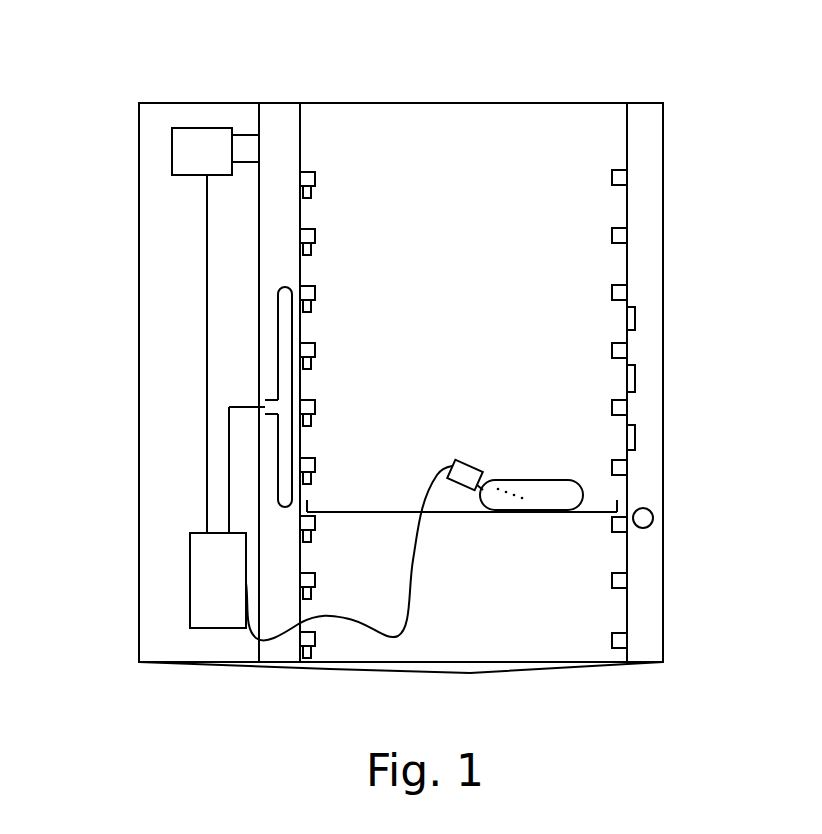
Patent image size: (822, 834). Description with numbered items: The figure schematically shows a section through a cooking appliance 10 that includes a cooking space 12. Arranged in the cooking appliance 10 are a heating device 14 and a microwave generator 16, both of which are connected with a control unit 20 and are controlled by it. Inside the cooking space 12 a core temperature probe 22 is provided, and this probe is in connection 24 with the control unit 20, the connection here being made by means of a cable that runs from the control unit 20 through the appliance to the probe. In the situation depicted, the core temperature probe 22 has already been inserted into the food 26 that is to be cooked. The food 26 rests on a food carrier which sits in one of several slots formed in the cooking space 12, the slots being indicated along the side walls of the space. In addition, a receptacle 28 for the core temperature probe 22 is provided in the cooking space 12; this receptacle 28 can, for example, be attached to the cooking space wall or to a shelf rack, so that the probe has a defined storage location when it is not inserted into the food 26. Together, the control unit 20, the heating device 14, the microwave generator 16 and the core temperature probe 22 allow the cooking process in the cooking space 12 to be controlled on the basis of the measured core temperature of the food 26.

The cooking appliance 10 is at (630, 78).
The cooking space 12 is at (368, 153).
The heating device 14 is at (283, 300).
The microwave generator 16 is at (203, 150).
The control unit 20 is at (217, 583).
The core temperature probe 22 is at (470, 477).
The connection 24 is at (357, 622).
The food 26 is at (557, 500).
The receptacle 28 is at (640, 521).